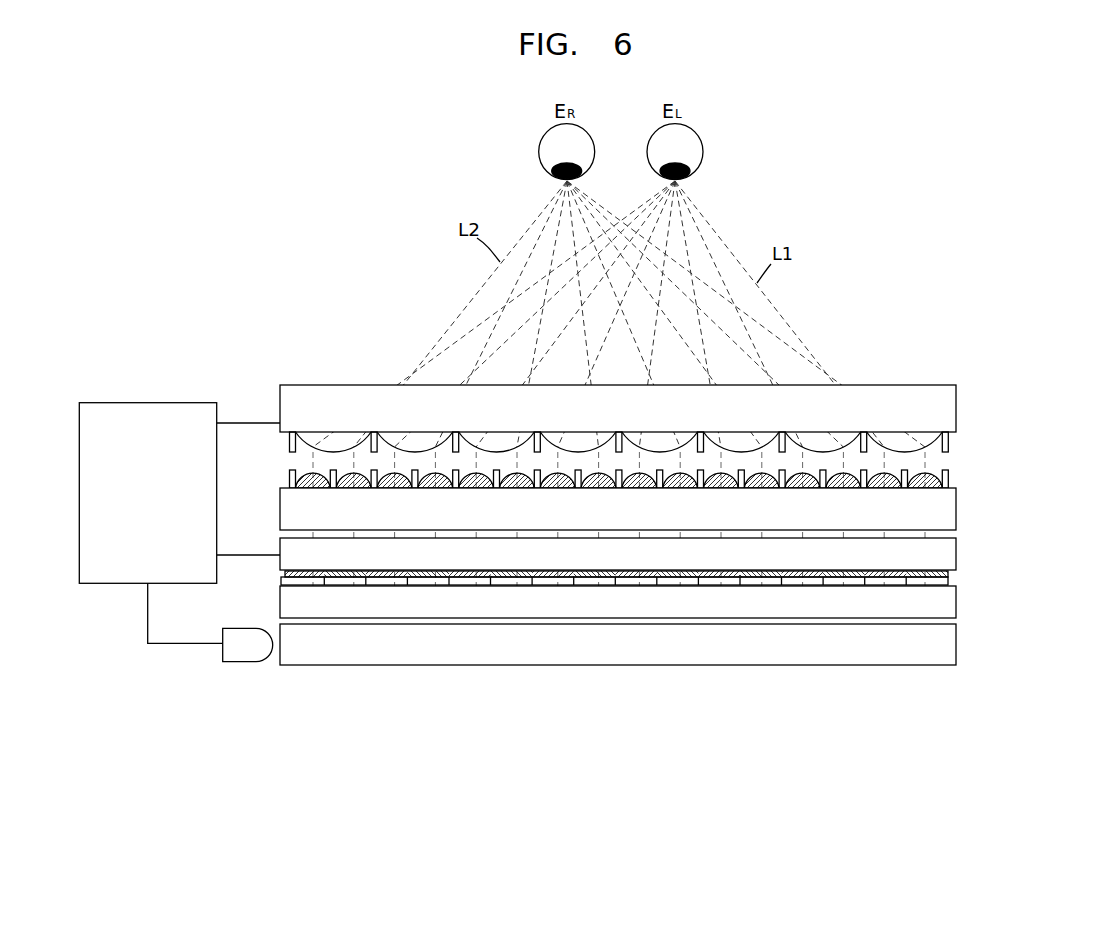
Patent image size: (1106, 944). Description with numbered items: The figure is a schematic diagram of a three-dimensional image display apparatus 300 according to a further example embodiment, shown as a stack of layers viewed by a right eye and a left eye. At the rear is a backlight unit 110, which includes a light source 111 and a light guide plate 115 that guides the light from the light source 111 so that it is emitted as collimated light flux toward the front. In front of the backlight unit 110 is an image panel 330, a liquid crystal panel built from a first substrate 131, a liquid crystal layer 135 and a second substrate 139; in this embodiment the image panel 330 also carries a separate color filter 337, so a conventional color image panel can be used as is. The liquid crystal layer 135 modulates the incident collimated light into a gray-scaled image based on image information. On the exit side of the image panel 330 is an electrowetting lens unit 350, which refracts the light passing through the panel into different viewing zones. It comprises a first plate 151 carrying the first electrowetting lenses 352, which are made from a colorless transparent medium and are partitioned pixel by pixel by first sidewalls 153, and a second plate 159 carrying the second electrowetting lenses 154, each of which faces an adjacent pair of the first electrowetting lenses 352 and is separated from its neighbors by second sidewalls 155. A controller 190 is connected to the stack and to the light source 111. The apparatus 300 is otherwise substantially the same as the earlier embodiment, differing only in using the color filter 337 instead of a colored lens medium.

The 3D image display apparatus 300 is at (944, 258).
The electrowetting lens unit 350 is at (1022, 458).
The second plate 159 is at (957, 401).
The second sidewalls 155 is at (948, 440).
The second electrowetting lenses 154 is at (936, 450).
The first electrowetting lenses 352 is at (948, 476).
The first sidewalls 153 is at (944, 481).
The first plate 151 is at (957, 510).
The image panel 330 is at (1022, 588).
The second substrate 139 is at (957, 548).
The color filter 337 is at (948, 573).
The liquid crystal layer 135 is at (948, 582).
The first substrate 131 is at (957, 603).
The backlight unit 110 is at (1022, 646).
The light guide plate 115 is at (957, 645).
The controller 190 is at (148, 400).
The light source 111 is at (242, 662).